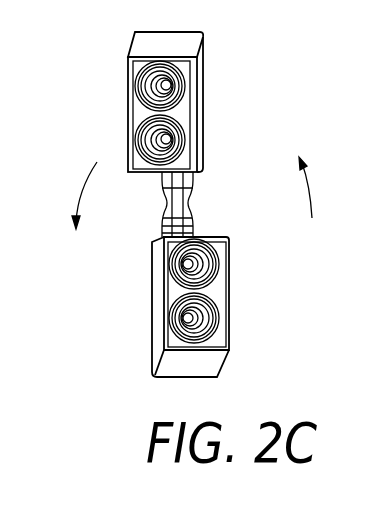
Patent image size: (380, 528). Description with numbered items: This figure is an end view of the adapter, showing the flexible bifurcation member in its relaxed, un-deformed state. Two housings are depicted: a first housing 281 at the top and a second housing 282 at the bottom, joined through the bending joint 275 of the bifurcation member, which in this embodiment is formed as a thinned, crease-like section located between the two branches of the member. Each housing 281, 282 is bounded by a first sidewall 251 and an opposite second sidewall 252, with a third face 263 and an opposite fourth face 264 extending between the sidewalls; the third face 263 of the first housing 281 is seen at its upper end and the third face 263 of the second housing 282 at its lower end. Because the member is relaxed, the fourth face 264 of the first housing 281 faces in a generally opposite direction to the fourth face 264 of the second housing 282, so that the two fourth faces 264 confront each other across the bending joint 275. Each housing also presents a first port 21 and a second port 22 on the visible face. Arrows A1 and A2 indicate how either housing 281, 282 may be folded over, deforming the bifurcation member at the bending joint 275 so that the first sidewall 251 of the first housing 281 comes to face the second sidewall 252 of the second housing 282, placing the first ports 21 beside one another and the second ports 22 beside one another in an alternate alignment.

The first port 21 is at (169, 81).
The second port 22 is at (168, 140).
The first sidewall 251 is at (127, 122).
The second sidewall 252 is at (199, 107).
The third face 263 is at (179, 38).
The fourth face 264 is at (148, 176).
The bending joint 275 is at (187, 205).
The first housing 281 is at (121, 60).
The second housing 282 is at (117, 351).
The arrow A1 is at (62, 205).
The arrow A2 is at (353, 200).